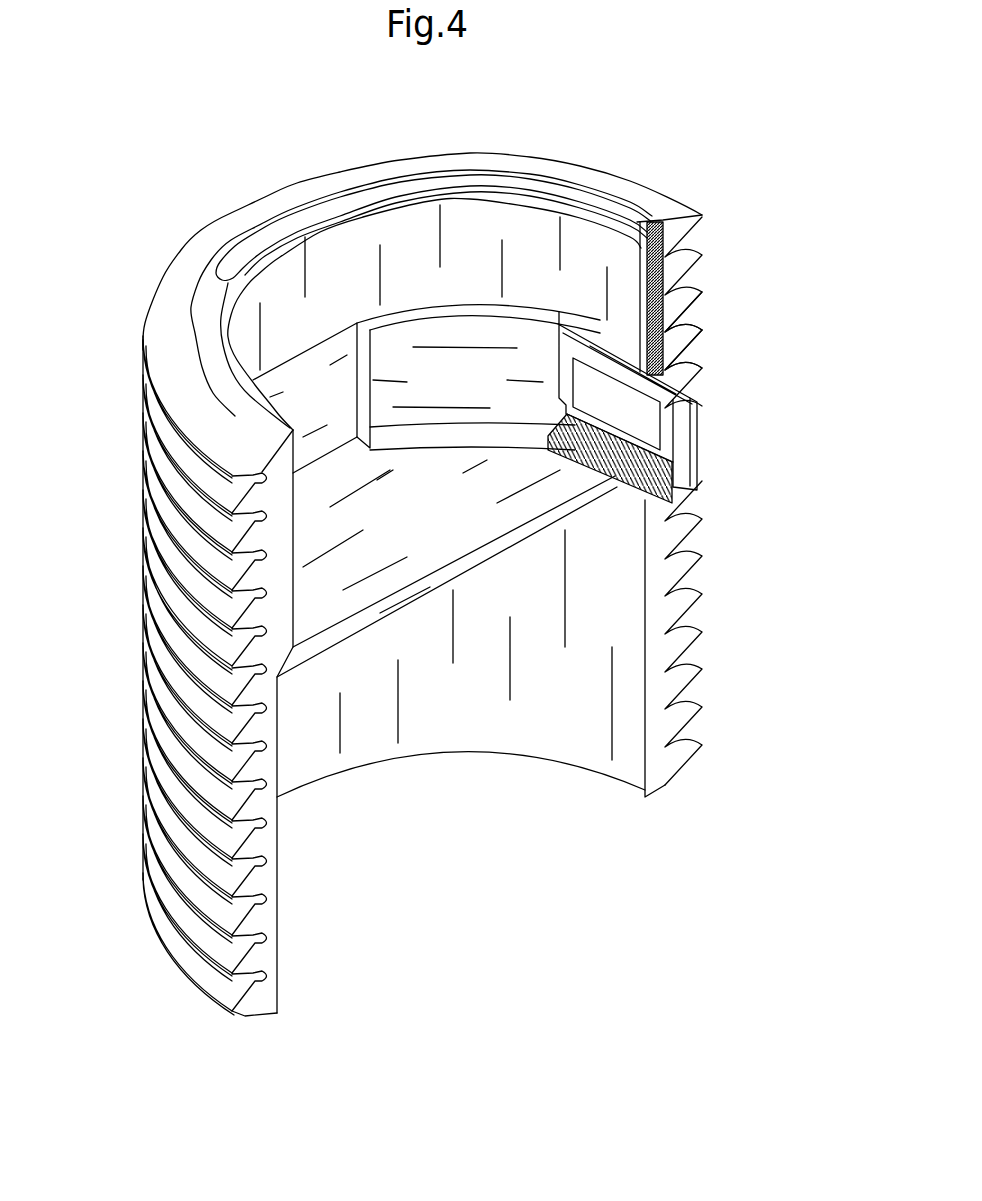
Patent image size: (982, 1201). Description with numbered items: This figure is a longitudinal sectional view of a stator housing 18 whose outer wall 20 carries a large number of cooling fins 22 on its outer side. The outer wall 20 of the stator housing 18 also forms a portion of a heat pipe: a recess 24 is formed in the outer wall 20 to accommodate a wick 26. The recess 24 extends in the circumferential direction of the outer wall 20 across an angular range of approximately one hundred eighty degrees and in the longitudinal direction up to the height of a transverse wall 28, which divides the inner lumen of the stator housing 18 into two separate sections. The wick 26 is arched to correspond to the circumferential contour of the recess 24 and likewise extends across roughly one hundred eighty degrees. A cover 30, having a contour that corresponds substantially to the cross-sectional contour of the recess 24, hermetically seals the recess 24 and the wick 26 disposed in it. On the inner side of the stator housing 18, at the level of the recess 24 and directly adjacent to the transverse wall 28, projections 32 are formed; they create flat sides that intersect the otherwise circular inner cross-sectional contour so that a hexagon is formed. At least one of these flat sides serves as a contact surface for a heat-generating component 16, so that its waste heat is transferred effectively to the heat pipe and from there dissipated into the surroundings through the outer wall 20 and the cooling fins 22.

The heat-generating component 16 is at (632, 416).
The stator housing 18 is at (717, 254).
The outer wall 20 is at (238, 410).
The cooling fins 22 is at (687, 522).
The recess 24 is at (700, 297).
The wick 26 is at (690, 340).
The transverse wall 28 is at (467, 521).
The cover 30 is at (645, 214).
The projections 32 is at (334, 409).